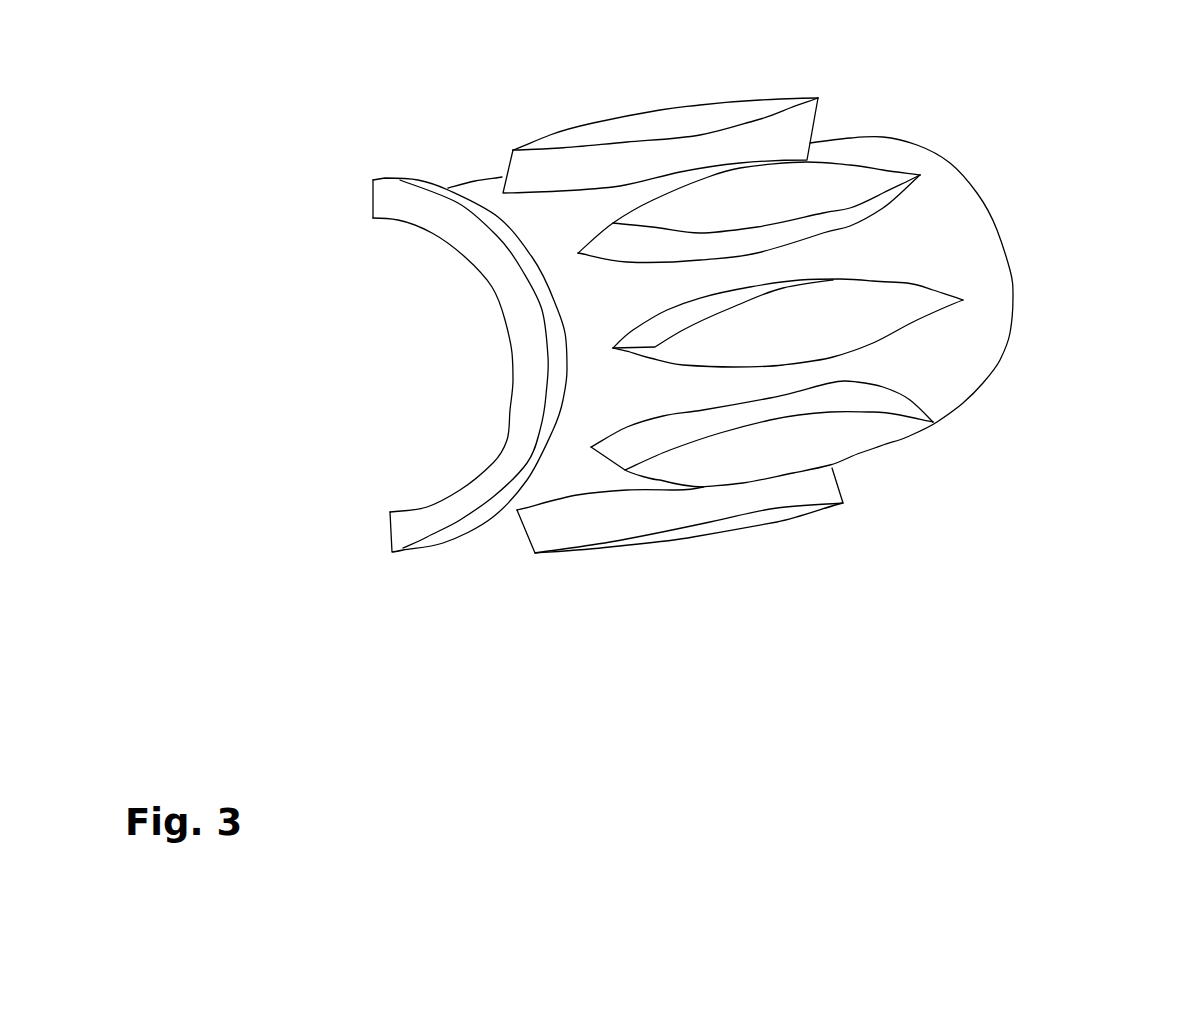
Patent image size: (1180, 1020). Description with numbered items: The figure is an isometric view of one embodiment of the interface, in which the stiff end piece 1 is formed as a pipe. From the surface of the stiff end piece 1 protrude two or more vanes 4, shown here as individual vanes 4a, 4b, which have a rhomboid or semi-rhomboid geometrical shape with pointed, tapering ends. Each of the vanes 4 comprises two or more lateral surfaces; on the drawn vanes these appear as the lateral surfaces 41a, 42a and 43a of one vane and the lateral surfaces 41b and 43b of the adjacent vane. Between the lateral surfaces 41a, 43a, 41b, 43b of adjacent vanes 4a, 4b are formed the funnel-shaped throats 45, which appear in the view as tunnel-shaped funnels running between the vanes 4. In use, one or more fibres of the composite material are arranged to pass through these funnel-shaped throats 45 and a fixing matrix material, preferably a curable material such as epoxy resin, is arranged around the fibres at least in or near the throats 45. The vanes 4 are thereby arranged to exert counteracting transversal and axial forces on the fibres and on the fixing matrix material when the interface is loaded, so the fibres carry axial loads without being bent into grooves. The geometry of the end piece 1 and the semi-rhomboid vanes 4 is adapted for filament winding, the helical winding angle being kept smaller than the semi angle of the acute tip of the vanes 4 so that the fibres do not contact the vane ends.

The stiff end piece 1 is at (412, 598).
The vanes 4 is at (808, 198).
The vane 4a is at (814, 333).
The vane 4b is at (845, 450).
The lateral surface 41a is at (647, 342).
The lateral surface 41b is at (668, 432).
The lateral surface 42a is at (653, 358).
The lateral surface 43a is at (907, 282).
The lateral surface 43b is at (893, 403).
The funnel-shaped throats 45 is at (816, 263).